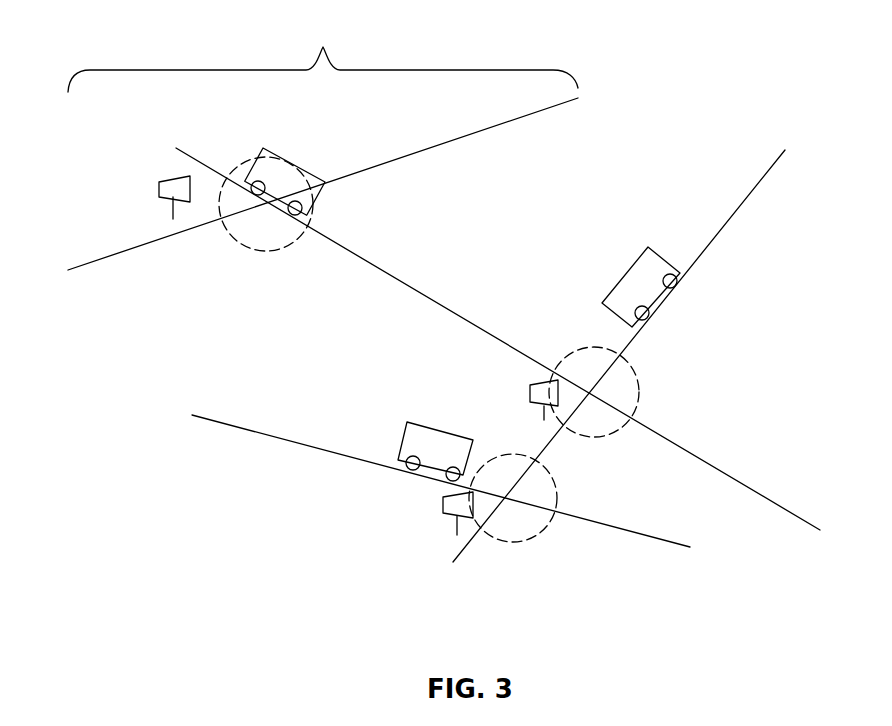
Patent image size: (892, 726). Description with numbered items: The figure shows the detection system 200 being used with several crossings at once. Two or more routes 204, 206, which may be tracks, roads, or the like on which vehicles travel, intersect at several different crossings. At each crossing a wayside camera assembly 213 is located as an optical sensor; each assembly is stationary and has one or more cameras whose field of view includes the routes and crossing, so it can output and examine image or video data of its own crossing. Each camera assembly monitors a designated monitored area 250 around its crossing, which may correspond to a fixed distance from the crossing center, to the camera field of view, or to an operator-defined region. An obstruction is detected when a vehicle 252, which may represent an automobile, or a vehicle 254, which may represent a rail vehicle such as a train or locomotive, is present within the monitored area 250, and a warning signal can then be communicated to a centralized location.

The detection system 200 is at (323, 55).
The route 204 is at (452, 142).
The route 206 is at (390, 275).
The wayside camera assembly 213 is at (153, 167).
The monitored area 250 is at (253, 248).
The vehicle 252 is at (263, 148).
The vehicle 254 is at (625, 275).